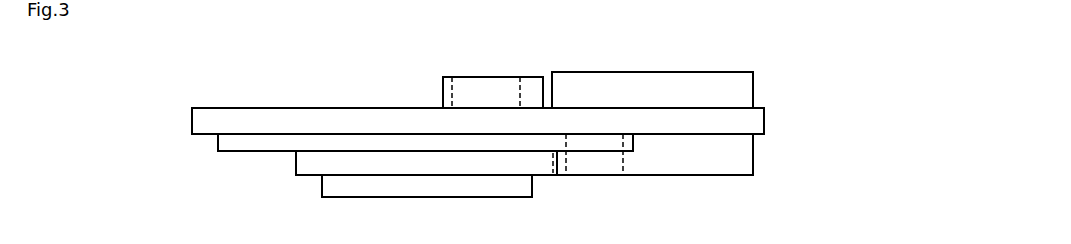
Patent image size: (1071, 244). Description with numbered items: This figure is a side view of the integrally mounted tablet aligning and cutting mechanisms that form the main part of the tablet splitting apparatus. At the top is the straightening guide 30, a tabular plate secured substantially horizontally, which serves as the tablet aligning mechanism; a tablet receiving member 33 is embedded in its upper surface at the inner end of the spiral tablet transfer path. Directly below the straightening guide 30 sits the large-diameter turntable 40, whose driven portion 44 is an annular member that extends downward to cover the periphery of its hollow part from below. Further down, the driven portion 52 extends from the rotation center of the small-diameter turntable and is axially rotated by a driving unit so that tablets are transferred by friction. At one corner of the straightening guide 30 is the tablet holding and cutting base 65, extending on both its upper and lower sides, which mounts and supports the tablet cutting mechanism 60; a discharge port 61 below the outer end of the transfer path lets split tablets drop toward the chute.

The straightening guide 30 is at (277, 107).
The tablet receiving member 33 is at (447, 77).
The large-diameter turntable 40 is at (218, 144).
The driven portion 44 is at (296, 160).
The driven portion 52 is at (330, 198).
The tablet cutting mechanism 60 is at (684, 128).
The discharge port 61 is at (597, 156).
The tablet holding and cutting base 65 is at (663, 88).